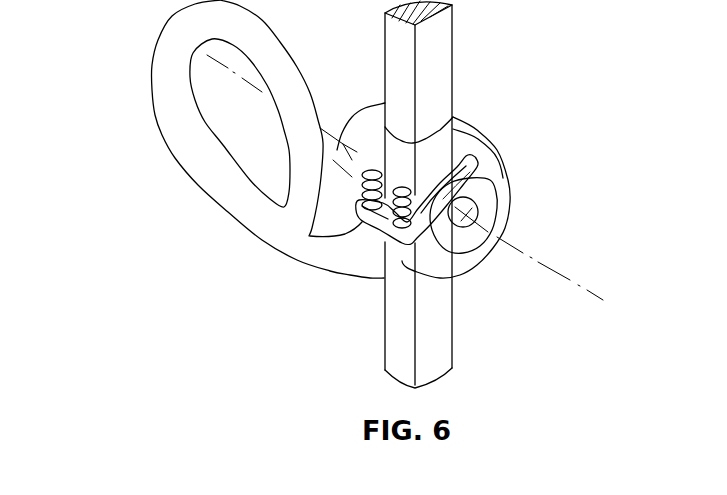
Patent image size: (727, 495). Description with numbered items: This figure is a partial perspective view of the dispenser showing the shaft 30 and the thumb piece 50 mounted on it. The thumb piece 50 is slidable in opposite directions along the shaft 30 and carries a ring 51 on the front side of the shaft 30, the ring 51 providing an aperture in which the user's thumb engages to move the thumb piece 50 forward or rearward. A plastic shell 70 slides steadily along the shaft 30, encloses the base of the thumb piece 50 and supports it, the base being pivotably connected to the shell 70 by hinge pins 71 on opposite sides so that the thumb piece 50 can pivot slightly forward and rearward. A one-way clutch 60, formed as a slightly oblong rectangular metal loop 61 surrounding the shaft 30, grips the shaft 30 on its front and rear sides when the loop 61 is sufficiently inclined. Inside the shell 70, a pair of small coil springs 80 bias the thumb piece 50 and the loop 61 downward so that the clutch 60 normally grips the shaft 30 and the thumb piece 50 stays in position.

The shaft 30 is at (438, 68).
The thumb piece 50 is at (130, 120).
The ring 51 is at (173, 44).
The one-way clutch 60 is at (495, 163).
The metal loop 61 is at (456, 185).
The shell 70 is at (463, 137).
The hinge pins 71 is at (474, 211).
The coil springs 80 is at (402, 226).